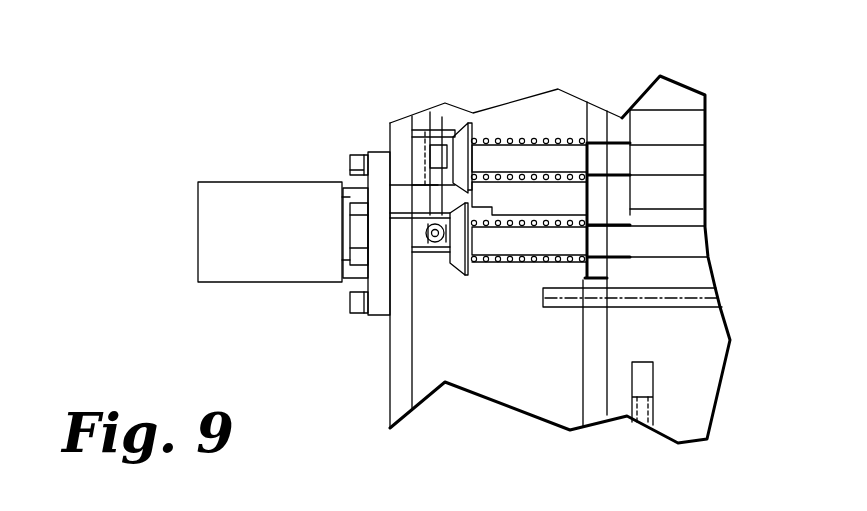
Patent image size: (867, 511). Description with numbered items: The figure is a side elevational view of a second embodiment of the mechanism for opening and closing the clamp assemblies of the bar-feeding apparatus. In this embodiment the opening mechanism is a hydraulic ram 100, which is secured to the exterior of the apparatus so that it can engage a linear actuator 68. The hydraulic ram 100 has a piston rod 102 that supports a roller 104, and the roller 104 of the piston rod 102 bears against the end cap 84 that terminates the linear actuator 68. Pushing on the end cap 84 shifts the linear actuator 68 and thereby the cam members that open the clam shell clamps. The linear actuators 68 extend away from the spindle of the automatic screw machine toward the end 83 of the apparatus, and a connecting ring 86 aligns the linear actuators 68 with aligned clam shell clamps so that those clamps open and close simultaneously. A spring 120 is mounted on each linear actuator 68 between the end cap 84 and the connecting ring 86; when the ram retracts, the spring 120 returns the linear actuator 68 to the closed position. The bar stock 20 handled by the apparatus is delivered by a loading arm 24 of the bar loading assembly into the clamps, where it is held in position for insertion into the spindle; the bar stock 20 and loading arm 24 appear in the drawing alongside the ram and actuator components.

The hydraulic ram 100 is at (197, 232).
The piston rod 102 is at (395, 243).
The roller 104 is at (440, 243).
The end 83 is at (397, 375).
The end cap 84 is at (468, 132).
The spring 120 is at (545, 143).
The connecting ring 86 is at (598, 118).
The linear actuator 68 is at (690, 240).
The bar stock 20 is at (712, 295).
The loading arm 24 is at (587, 385).